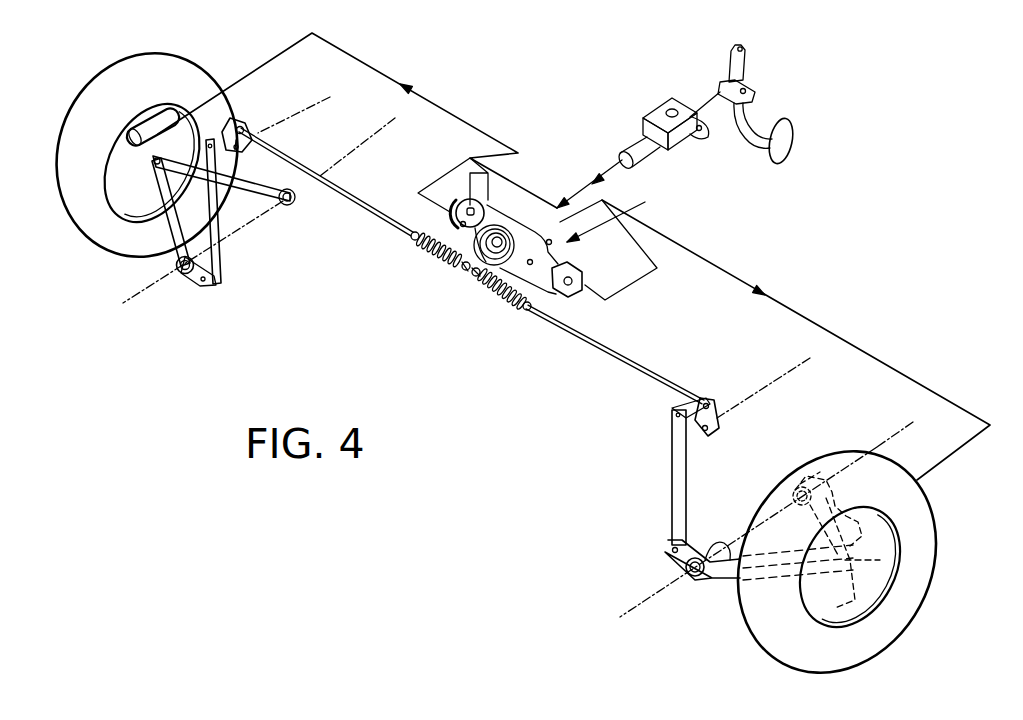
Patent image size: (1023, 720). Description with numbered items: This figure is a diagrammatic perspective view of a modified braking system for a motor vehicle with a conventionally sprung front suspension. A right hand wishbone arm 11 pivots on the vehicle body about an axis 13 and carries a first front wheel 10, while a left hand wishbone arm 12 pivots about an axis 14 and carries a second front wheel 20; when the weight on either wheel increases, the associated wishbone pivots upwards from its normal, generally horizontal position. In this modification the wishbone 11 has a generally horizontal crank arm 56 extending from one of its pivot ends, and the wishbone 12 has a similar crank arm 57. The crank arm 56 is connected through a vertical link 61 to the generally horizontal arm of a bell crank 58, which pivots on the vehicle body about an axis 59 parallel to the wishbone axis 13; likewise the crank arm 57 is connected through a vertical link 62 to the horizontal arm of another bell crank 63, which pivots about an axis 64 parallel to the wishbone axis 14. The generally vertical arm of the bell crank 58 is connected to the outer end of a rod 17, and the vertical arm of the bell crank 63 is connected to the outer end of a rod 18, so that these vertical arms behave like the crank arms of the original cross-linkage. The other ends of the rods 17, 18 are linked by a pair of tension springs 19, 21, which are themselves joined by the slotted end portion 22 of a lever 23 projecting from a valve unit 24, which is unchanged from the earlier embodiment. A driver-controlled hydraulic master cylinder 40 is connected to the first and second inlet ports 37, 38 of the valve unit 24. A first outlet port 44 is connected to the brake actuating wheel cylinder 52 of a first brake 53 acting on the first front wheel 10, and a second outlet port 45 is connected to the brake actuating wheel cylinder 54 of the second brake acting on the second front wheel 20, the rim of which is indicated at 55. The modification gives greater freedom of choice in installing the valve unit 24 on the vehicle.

The first front wheel 10 is at (192, 78).
The wishbone arm 11 is at (150, 267).
The wishbone arm 12 is at (870, 608).
The axis 13 is at (358, 152).
The axis 14 is at (880, 440).
The rod 17 is at (362, 215).
The rod 18 is at (637, 373).
The tension spring 19 is at (430, 258).
The second front wheel 20 is at (752, 617).
The tension spring 21 is at (516, 302).
The slotted end portion 22 is at (470, 273).
The lever 23 is at (473, 212).
The valve unit 24 is at (623, 214).
The first inlet port 37 is at (451, 201).
The second inlet port 38 is at (570, 286).
The hydraulic master cylinder 40 is at (647, 132).
The first outlet port 44 is at (520, 166).
The second outlet port 45 is at (555, 245).
The brake actuating wheel cylinder 52 is at (147, 122).
The first brake 53 is at (118, 193).
The brake actuating wheel cylinder 54 is at (855, 560).
The rim flange 55 is at (837, 610).
The crank arm 56 is at (193, 287).
The crank arm 57 is at (668, 563).
The bell crank 58 is at (233, 130).
The axis 59 is at (312, 102).
The vertical link 61 is at (220, 263).
The vertical link 62 is at (670, 480).
The bell crank 63 is at (713, 408).
The axis 64 is at (793, 373).